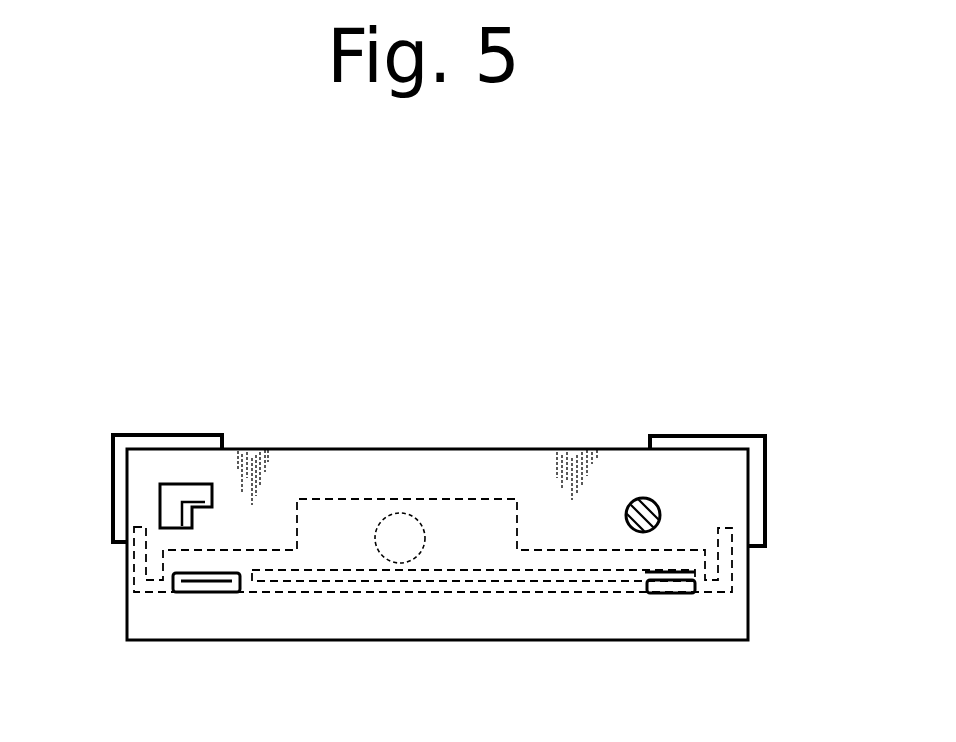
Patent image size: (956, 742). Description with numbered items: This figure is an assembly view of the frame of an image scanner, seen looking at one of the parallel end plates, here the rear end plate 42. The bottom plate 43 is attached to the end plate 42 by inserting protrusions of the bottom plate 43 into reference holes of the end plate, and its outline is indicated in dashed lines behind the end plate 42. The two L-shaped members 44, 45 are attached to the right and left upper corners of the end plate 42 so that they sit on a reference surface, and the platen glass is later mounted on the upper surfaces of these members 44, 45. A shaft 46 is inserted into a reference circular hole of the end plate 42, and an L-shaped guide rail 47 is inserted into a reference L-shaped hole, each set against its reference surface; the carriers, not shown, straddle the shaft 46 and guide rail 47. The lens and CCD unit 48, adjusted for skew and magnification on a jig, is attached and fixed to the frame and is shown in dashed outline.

The rear end plate 42 is at (738, 622).
The bottom plate 43 is at (468, 593).
The L-shaped member 44 is at (170, 435).
The L-shaped member 45 is at (759, 460).
The shaft 46 is at (661, 518).
The L-shaped guide rail 47 is at (182, 506).
The lens and CCD unit 48 is at (503, 496).